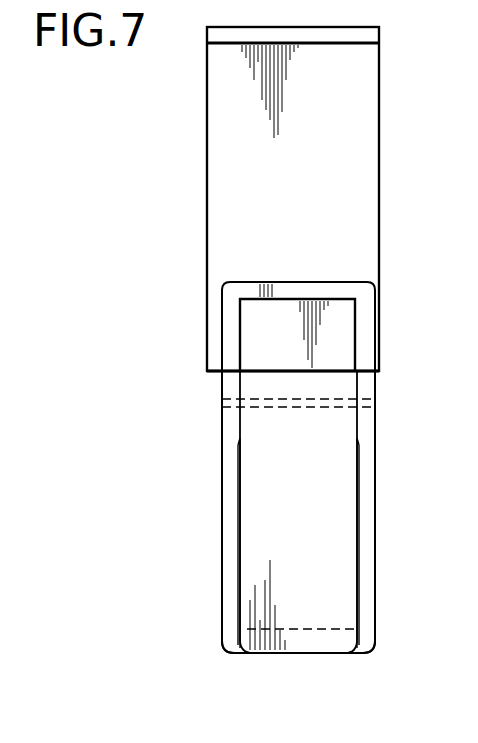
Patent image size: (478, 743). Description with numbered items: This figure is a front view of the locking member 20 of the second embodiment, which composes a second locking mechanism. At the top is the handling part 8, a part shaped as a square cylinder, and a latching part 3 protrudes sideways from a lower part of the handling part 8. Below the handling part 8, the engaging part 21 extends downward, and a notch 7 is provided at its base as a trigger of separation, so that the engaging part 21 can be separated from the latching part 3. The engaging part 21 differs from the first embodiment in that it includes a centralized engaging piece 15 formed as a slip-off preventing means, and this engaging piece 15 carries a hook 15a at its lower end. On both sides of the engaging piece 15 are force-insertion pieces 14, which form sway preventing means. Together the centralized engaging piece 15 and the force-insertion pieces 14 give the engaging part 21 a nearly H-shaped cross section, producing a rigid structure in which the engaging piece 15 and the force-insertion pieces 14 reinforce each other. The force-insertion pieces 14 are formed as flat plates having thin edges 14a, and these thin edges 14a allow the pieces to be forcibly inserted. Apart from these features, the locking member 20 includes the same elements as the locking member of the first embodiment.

The locking member 20 is at (405, 160).
The handling part 8 is at (225, 188).
The latching part 3 is at (345, 282).
The notch 7 is at (322, 398).
The force-insertion pieces 14 is at (228, 468).
The thin edges 14a is at (242, 507).
The engaging piece 15 is at (340, 528).
The engaging part 21 is at (343, 605).
The hook 15a is at (318, 644).